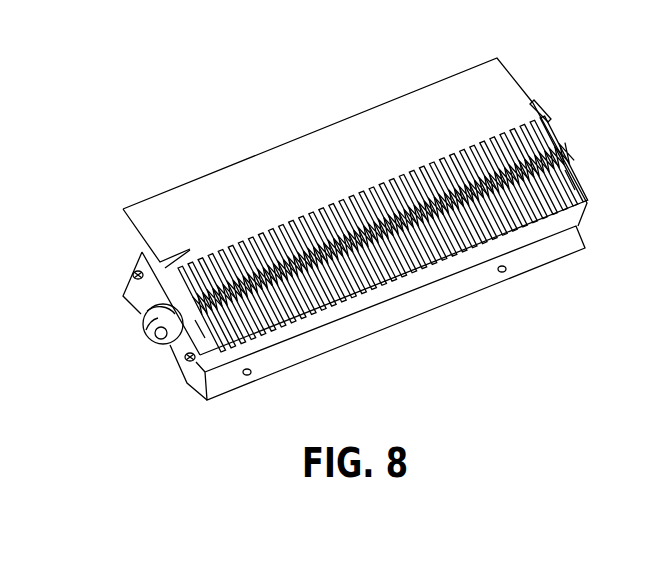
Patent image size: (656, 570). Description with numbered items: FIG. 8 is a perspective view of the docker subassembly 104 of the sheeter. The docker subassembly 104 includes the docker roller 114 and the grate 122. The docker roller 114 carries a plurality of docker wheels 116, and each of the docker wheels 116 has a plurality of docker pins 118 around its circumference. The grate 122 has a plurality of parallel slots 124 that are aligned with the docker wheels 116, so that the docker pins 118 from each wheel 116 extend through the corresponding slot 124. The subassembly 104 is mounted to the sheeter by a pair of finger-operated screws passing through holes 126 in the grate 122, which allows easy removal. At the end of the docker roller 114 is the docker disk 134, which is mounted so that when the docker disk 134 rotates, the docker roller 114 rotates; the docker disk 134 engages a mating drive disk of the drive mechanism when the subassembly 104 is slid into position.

The docker subassembly 104 is at (544, 105).
The docker roller 114 is at (570, 156).
The docker wheels 116 is at (198, 327).
The docker pins 118 is at (572, 183).
The grate 122 is at (500, 63).
The parallel slots 124 is at (532, 138).
The holes 126 is at (503, 273).
The docker disk 134 is at (156, 348).